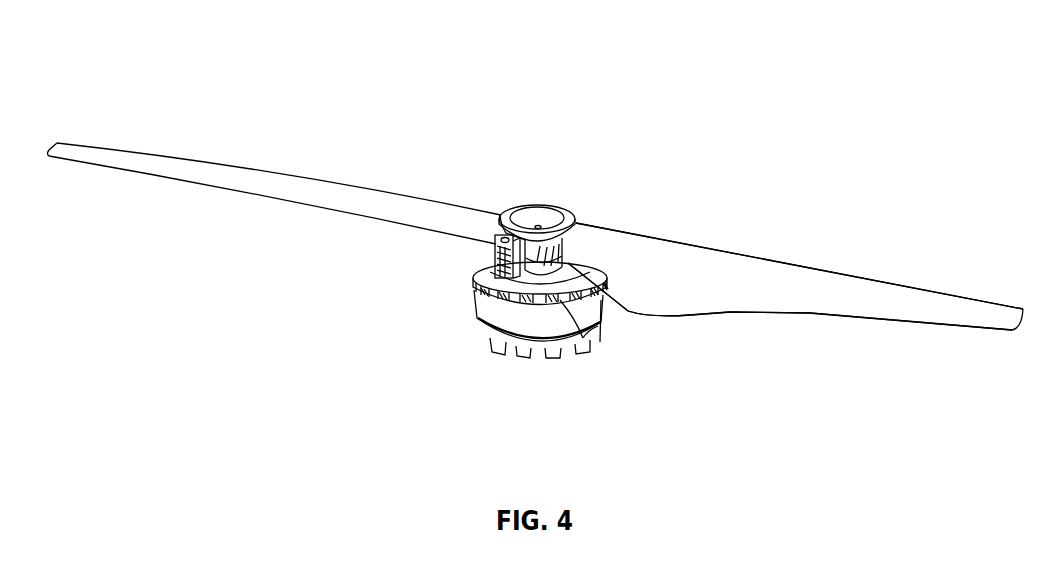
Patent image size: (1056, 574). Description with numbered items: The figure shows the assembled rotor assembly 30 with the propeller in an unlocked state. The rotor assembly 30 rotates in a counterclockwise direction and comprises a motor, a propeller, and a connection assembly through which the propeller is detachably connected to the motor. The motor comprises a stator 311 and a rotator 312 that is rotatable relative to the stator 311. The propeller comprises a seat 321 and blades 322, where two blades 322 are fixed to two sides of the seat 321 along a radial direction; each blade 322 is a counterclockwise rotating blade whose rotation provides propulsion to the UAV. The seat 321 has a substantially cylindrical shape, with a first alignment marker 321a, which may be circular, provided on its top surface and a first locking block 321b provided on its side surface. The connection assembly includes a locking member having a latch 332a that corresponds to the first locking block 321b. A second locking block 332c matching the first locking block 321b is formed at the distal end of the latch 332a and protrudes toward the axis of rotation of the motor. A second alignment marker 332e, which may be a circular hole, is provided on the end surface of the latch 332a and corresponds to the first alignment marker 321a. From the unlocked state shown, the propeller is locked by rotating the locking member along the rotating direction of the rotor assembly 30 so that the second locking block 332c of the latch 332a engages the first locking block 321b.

The rotor assembly 30 is at (562, 62).
The stator 311 is at (500, 342).
The rotator 312 is at (585, 311).
The seat 321 is at (557, 209).
The first alignment marker 321a is at (539, 208).
The first locking block 321b is at (584, 338).
The blade 322 is at (733, 270).
The latch 332a is at (476, 300).
The second locking block 332c is at (503, 209).
The second alignment marker 332e is at (494, 244).